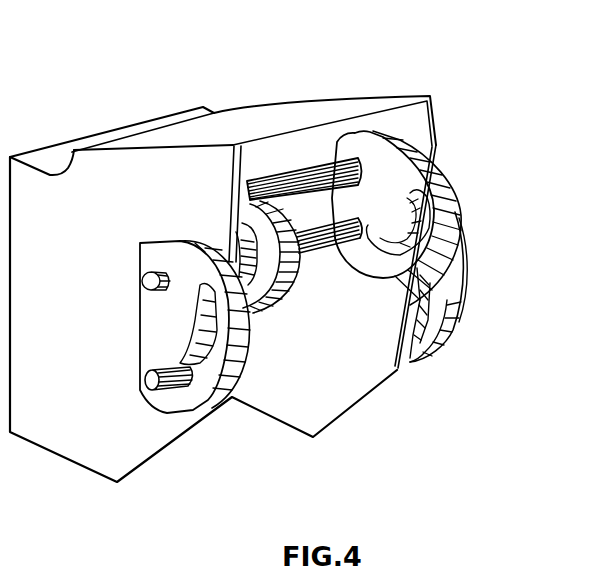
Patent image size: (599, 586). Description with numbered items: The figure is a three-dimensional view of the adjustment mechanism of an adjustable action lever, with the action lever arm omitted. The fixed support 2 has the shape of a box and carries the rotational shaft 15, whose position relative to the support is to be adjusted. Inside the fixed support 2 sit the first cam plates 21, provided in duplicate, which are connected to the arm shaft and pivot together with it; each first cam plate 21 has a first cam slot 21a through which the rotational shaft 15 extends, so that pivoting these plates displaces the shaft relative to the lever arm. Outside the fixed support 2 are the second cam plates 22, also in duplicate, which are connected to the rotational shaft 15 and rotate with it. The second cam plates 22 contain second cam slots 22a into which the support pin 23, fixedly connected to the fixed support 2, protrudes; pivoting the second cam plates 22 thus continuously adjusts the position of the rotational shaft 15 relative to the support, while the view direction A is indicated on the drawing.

The fixed support 2 is at (100, 457).
The rotational shaft 15 is at (331, 243).
The first cam plates 21 is at (393, 173).
The first cam slots 21a is at (423, 213).
The second cam plates 22 is at (218, 398).
The second cam slots 22a is at (227, 320).
The support pin 23 is at (147, 380).
The direction A is at (300, 164).